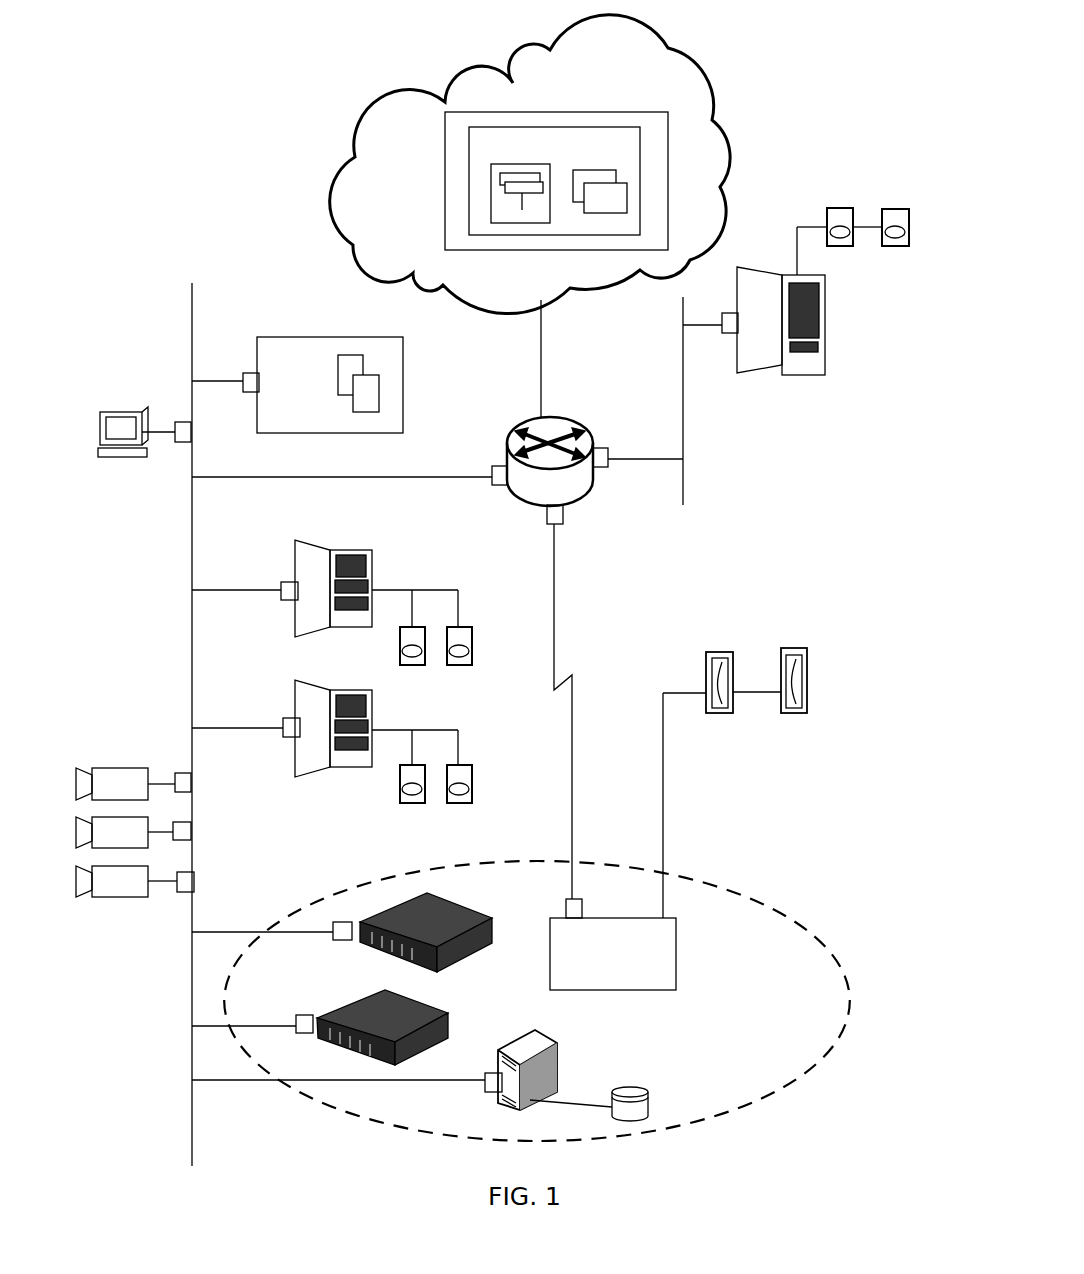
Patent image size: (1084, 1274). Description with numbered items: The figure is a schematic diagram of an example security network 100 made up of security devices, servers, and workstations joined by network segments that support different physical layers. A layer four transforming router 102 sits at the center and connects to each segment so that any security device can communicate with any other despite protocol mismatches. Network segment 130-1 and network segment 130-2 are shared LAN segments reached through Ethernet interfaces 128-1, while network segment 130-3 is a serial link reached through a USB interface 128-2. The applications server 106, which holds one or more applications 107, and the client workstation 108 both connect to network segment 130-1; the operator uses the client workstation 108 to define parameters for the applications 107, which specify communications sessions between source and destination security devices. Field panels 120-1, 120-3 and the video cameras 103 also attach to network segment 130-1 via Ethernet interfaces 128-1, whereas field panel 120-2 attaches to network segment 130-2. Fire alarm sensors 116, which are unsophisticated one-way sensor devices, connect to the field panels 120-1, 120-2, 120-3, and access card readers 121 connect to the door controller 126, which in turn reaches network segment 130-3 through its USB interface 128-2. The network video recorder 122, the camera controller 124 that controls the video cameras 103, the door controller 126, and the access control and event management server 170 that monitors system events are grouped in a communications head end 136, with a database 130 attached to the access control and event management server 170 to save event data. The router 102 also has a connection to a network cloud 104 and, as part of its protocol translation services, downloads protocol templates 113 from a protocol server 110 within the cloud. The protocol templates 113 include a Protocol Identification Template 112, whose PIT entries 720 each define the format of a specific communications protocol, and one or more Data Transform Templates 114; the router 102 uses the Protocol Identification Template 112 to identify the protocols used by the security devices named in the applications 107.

The security network 100 is at (298, 78).
The router 102 is at (568, 418).
The video cameras 103 is at (126, 832).
The network cloud 104 is at (333, 184).
The applications server 106 is at (383, 337).
The applications 107 is at (338, 367).
The client workstation 108 is at (137, 457).
The protocol server 110 is at (567, 112).
The Protocol Identification Template (PIT) 112 is at (490, 187).
The protocol templates 113 is at (554, 181).
The Data Transform Templates (DTT) 114 is at (627, 197).
The fire alarm sensors 116 is at (890, 208).
The field panel 120-1 is at (339, 550).
The field panel 120-2 is at (818, 348).
The field panel 120-3 is at (347, 690).
The access card readers 121 is at (795, 713).
The network video recorder 122 is at (402, 900).
The camera controller 124 is at (448, 1022).
The door controller 126 is at (613, 954).
The Ethernet interfaces 128-1 is at (247, 373).
The USB interface 128-2 is at (563, 524).
The database 130 is at (648, 1108).
The network segment 130-1 is at (191, 328).
The network segment 130-2 is at (687, 425).
The network segment 130-3 is at (557, 610).
The communications head end 136 is at (750, 897).
The access control and event management server 170 is at (557, 1063).
The PIT entries 720 is at (522, 197).